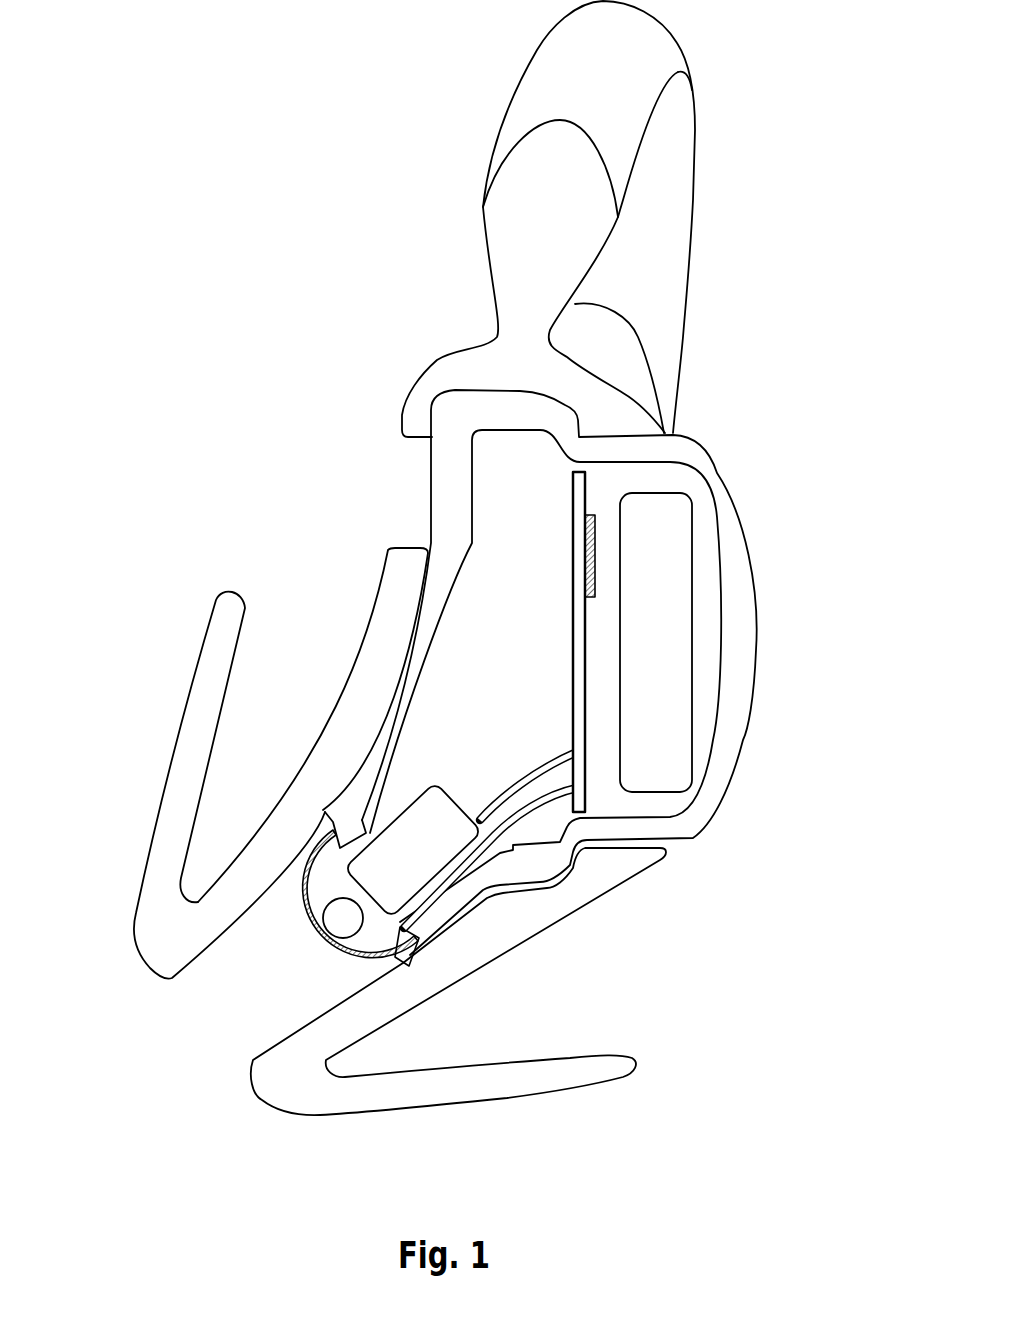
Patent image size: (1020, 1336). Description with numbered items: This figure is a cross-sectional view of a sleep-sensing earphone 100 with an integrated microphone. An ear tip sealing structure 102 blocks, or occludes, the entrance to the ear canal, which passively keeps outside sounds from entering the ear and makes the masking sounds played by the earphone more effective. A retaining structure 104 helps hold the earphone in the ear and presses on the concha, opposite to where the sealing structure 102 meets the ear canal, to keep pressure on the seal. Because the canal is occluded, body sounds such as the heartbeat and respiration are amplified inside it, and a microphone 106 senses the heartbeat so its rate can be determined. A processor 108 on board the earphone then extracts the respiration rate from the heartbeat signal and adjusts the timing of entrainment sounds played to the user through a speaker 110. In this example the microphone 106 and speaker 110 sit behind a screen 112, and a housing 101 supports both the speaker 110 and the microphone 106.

The sleep-sensing earphone 100 is at (120, 383).
The housing 101 is at (740, 605).
The ear tip sealing structure 102 is at (556, 1088).
The retaining structure 104 is at (675, 186).
The microphone 106 is at (338, 925).
The processor 108 is at (590, 557).
The speaker 110 is at (442, 812).
The screen 112 is at (302, 878).